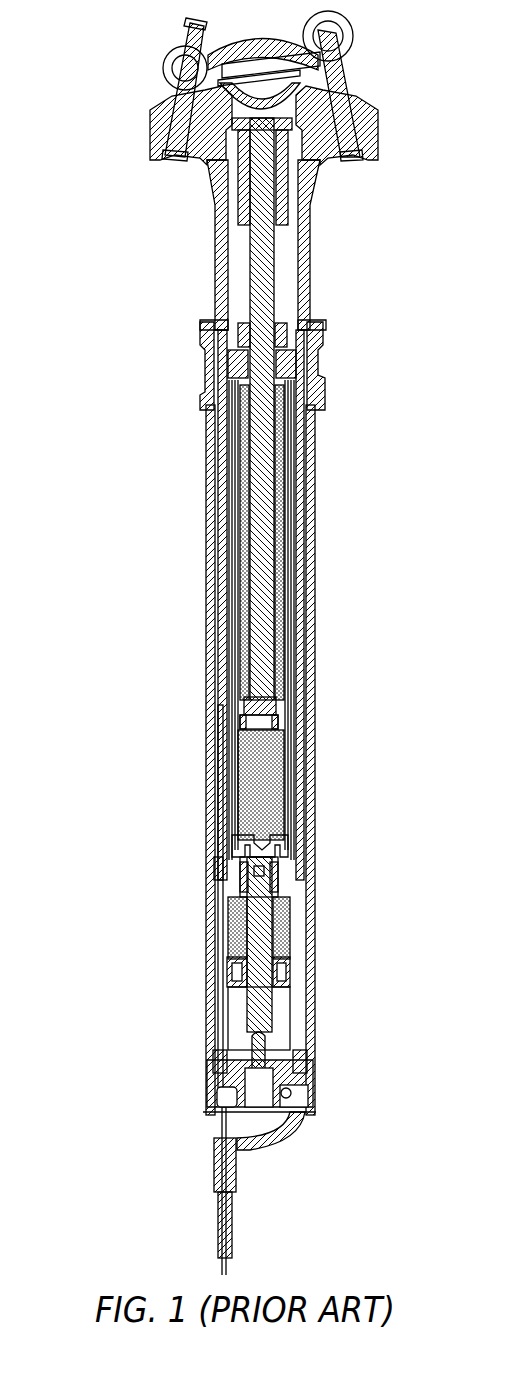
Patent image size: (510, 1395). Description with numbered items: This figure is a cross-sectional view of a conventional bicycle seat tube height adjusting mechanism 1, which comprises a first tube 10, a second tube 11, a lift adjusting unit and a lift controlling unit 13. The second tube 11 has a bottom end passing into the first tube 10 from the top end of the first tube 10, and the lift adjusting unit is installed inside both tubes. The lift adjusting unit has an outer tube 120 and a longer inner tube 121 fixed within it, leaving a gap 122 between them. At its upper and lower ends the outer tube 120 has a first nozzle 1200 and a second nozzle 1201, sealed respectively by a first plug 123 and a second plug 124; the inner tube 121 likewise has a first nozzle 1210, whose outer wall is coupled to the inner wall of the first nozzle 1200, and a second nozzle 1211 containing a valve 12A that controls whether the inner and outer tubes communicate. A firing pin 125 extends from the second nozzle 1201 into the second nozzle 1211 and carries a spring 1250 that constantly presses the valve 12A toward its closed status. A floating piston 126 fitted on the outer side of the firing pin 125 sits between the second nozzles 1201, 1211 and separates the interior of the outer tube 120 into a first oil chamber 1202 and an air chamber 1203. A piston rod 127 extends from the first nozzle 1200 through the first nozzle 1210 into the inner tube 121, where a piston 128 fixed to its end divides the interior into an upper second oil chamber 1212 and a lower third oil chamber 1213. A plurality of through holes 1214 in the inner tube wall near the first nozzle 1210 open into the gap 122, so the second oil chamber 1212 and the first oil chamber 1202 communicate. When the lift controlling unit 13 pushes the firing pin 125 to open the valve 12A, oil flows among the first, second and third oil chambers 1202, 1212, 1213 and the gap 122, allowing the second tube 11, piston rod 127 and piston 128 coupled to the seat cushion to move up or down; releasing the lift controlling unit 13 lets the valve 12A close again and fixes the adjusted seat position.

The bicycle seat tube height adjusting mechanism 1 is at (145, 627).
The first tube 10 is at (212, 522).
The second tube 11 is at (216, 262).
The valve 12A is at (272, 846).
The lift controlling unit 13 is at (198, 1180).
The outer tube 120 is at (300, 570).
The inner tube 121 is at (290, 512).
The gap 122 is at (296, 468).
The first plug 123 is at (226, 365).
The second plug 124 is at (298, 1082).
The firing pin 125 is at (258, 947).
The floating piston 126 is at (280, 980).
The piston rod 127 is at (262, 646).
The piston 128 is at (278, 724).
The first nozzle of the outer tube 1200 is at (210, 386).
The second nozzle of the outer tube 1201 is at (306, 1066).
The first oil chamber 1202 is at (281, 917).
The air chamber 1203 is at (276, 1014).
The first nozzle of the inner tube 1210 is at (298, 373).
The second nozzle of the inner tube 1211 is at (226, 822).
The second oil chamber 1212 is at (278, 610).
The third oil chamber 1213 is at (262, 792).
The through holes 1214 is at (318, 392).
The spring 1250 is at (278, 874).